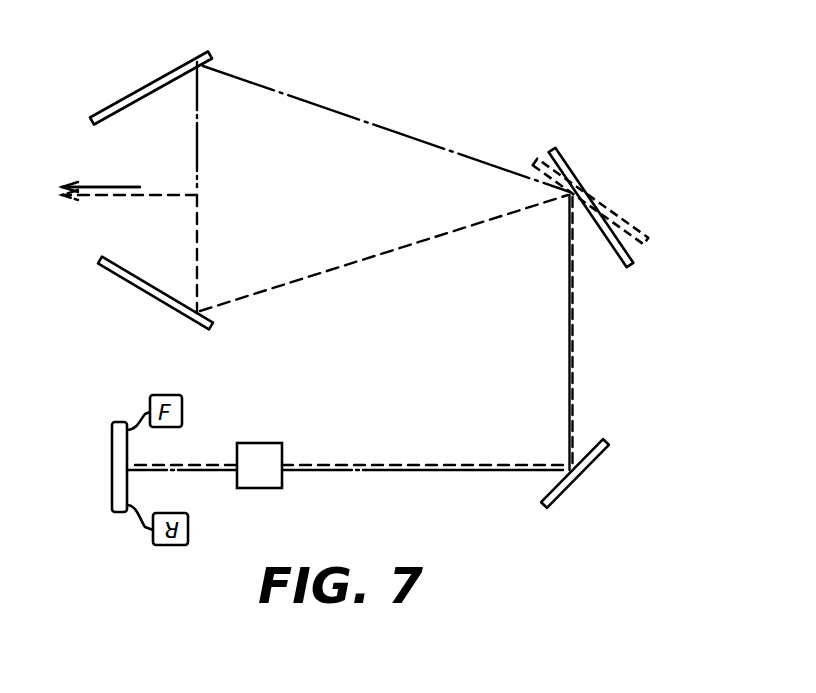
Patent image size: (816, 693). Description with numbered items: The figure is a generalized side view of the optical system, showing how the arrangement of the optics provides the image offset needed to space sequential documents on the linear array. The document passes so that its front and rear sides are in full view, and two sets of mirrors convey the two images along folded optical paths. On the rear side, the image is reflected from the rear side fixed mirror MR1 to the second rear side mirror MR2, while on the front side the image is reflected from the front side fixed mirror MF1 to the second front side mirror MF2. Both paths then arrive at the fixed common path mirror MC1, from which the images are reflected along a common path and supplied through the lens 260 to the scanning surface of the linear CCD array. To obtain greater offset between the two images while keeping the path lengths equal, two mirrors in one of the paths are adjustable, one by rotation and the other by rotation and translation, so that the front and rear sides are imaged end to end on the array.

The rear side fixed mirror MR1 is at (146, 88).
The front side fixed mirror MF1 is at (116, 278).
The second rear side mirror MR2 is at (565, 162).
The second front side mirror MF2 is at (632, 226).
The fixed common path mirror MC1 is at (596, 457).
The lens 260 is at (258, 450).